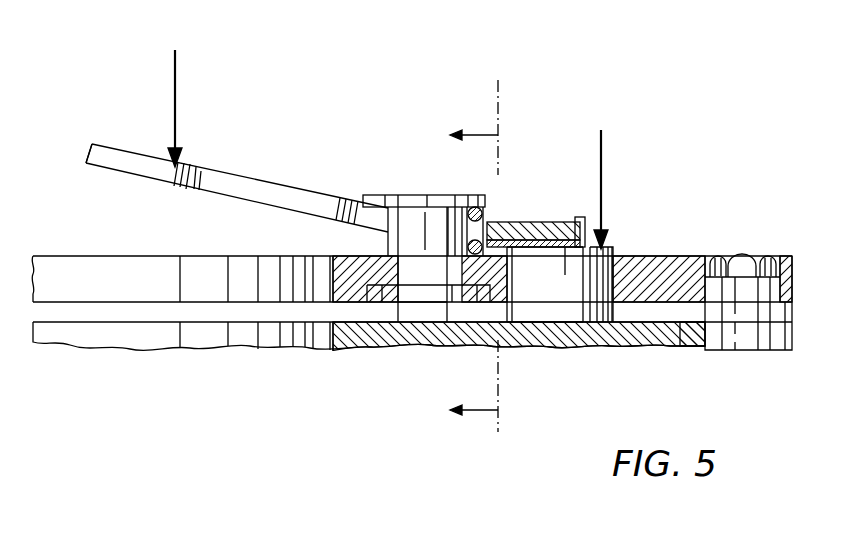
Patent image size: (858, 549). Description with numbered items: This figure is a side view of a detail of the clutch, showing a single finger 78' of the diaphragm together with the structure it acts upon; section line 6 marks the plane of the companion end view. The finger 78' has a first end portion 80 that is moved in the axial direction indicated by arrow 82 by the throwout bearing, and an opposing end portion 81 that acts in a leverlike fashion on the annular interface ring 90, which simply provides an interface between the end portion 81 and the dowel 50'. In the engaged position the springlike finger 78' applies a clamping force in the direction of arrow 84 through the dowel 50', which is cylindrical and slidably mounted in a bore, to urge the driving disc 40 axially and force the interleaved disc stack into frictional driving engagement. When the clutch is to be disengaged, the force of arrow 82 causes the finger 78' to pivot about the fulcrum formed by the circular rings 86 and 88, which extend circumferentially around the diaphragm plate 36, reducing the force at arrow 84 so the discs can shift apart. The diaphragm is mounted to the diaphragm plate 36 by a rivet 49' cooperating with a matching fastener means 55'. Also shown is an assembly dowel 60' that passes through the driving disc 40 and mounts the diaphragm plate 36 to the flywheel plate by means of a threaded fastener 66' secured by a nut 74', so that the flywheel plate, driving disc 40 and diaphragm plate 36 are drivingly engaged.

The section line 6- 6 is at (501, 256).
The diaphragm plate 36 is at (131, 286).
The driving disc 40 is at (246, 342).
The rivet 49' is at (424, 231).
The dowel 50' is at (545, 284).
The fastener means 55' is at (402, 342).
The assembly dowel 60' is at (769, 326).
The threaded fastener 66' is at (789, 286).
The nut 74' is at (742, 252).
The finger 78' is at (237, 181).
The first end portion 80 is at (110, 150).
The opposing end portion 81 is at (578, 216).
The arrow 82 is at (177, 113).
The arrow 84 is at (603, 168).
The circular ring 86 is at (481, 214).
The circular ring 88 is at (503, 222).
The interface ring 90 is at (588, 228).